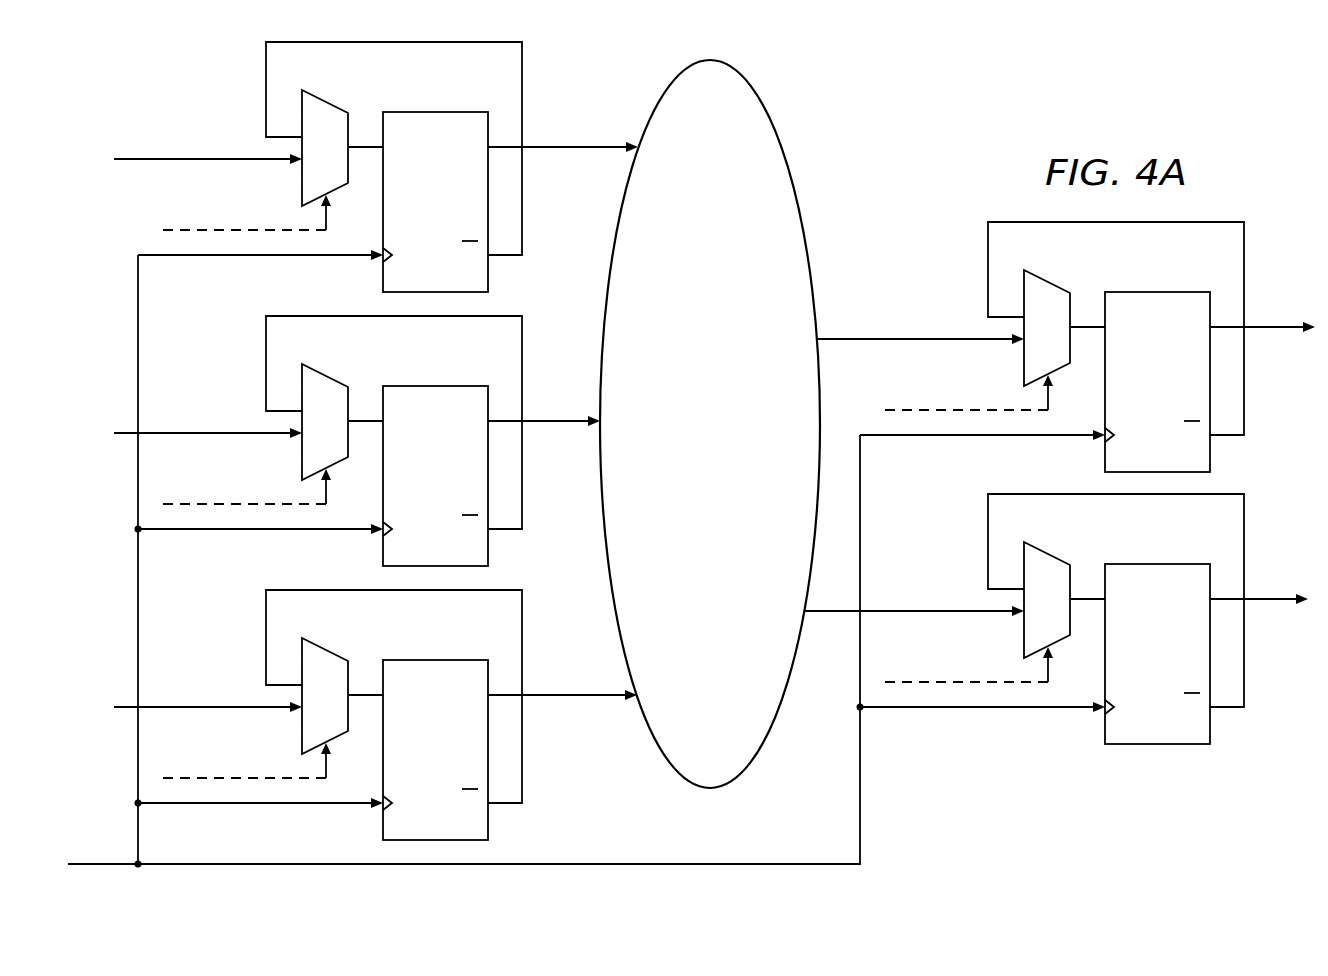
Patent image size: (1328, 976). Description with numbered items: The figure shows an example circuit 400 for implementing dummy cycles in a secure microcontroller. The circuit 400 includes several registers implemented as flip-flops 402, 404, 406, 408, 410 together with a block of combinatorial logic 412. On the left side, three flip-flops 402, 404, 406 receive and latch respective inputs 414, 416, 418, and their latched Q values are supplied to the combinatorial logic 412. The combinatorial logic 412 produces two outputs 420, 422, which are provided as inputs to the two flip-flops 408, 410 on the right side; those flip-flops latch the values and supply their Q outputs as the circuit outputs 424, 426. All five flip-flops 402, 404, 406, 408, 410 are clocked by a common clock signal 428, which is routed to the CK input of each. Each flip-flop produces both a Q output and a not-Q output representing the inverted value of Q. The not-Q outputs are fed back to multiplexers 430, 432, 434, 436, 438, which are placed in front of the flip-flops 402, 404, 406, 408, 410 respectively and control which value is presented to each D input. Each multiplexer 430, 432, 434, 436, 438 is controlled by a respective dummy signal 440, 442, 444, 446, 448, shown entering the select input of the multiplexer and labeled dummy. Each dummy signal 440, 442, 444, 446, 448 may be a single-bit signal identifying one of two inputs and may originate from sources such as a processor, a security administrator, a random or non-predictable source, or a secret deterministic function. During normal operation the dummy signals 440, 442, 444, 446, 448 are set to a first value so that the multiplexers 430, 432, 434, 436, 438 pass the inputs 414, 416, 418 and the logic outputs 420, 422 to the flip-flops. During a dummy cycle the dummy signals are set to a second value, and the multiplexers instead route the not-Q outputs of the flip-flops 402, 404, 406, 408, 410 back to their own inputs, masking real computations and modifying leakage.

The circuit 400 is at (884, 120).
The flip-flop 402 is at (415, 221).
The flip-flop 404 is at (394, 441).
The flip-flop 406 is at (394, 715).
The flip-flop 408 is at (1116, 347).
The flip-flop 410 is at (1116, 619).
The combinatorial logic 412 is at (689, 468).
The input 414 is at (207, 159).
The input 416 is at (208, 407).
The input 418 is at (208, 681).
The output 420 is at (920, 311).
The output 422 is at (914, 584).
The output 424 is at (1262, 301).
The output 426 is at (1259, 626).
The clock signal 428 is at (108, 866).
The multiplexer 430 is at (334, 105).
The multiplexer 432 is at (340, 404).
The multiplexer 434 is at (340, 678).
The multiplexer 436 is at (1062, 310).
The multiplexer 438 is at (1062, 582).
The dummy signal 440 is at (187, 230).
The dummy signal 442 is at (242, 475).
The dummy signal 444 is at (242, 749).
The dummy signal 446 is at (969, 380).
The dummy signal 448 is at (969, 652).